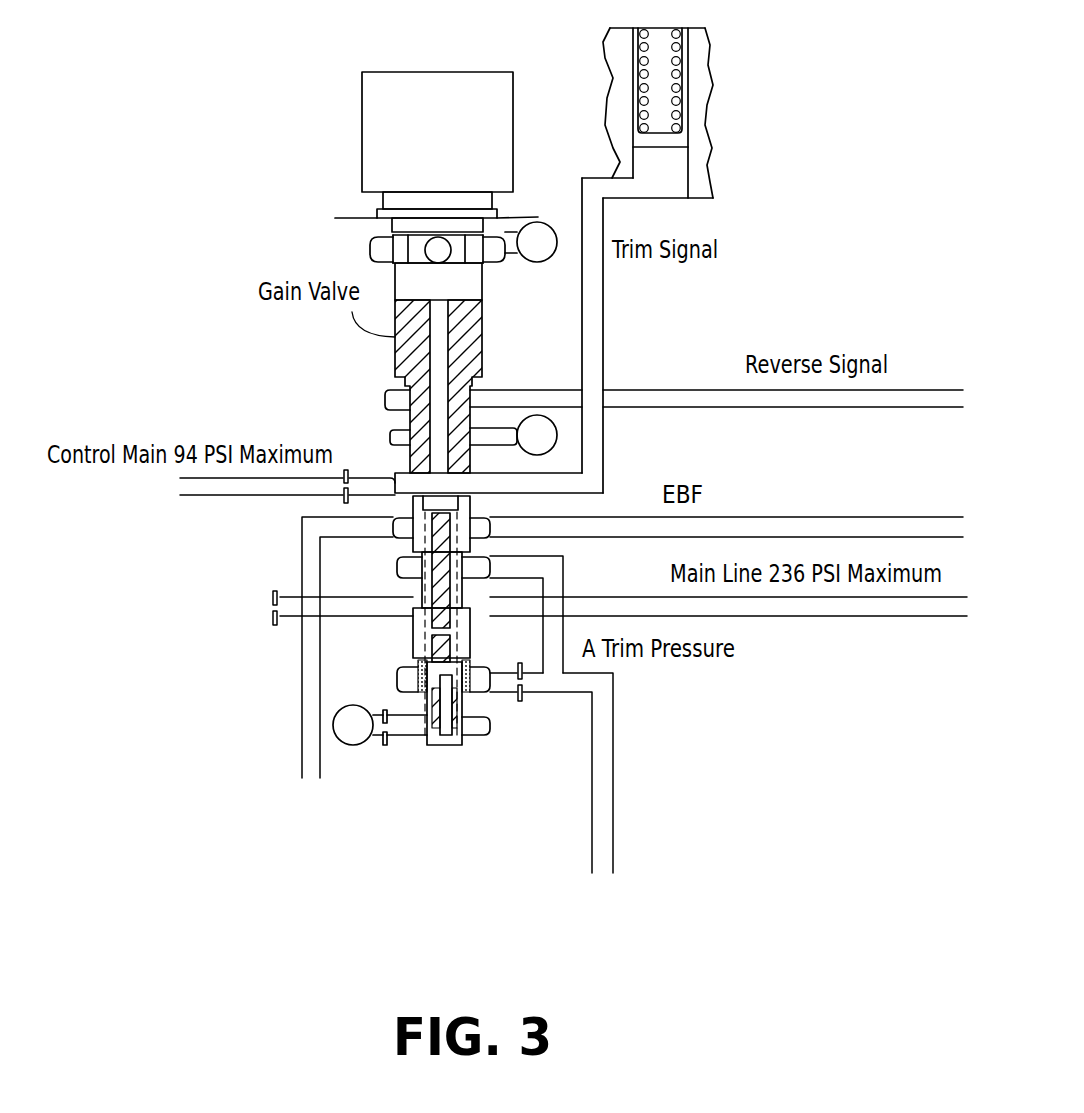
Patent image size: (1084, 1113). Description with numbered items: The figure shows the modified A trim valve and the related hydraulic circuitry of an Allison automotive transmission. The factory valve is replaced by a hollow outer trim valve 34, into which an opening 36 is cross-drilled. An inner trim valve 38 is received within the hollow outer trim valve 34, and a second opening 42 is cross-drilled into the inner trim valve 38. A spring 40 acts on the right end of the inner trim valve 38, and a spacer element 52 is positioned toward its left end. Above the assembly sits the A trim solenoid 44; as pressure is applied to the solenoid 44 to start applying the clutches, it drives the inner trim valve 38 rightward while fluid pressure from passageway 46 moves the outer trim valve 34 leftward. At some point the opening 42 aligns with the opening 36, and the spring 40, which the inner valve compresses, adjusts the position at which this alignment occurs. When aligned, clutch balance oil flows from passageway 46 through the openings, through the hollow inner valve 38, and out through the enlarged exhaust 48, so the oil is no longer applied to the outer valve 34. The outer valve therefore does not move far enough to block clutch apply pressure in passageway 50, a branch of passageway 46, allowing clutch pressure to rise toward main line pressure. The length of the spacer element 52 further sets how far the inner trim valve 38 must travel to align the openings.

The trim valve 34 is at (463, 742).
The opening 36 is at (477, 670).
The inner trim valve 38 is at (453, 747).
The spring 40 is at (426, 745).
The opening 42 is at (418, 673).
The A trim solenoid 44 is at (362, 108).
The passageway 46 is at (525, 682).
The exhaust 48 is at (336, 715).
The passageway 50 is at (565, 575).
The spacer element 52 is at (430, 570).